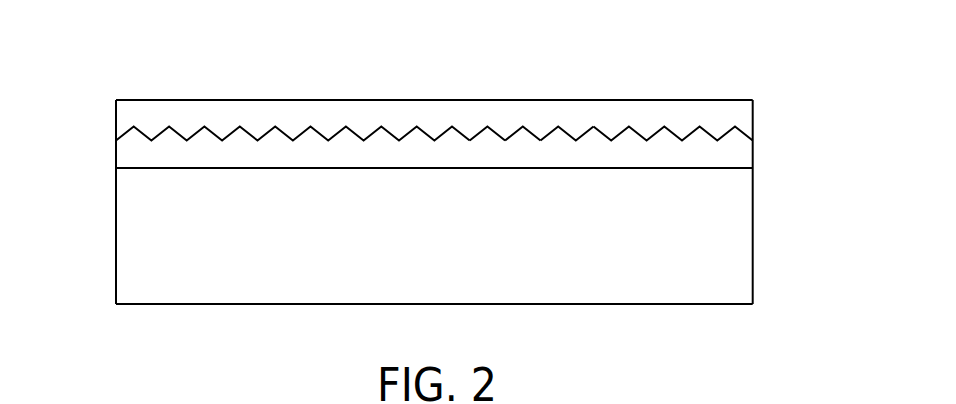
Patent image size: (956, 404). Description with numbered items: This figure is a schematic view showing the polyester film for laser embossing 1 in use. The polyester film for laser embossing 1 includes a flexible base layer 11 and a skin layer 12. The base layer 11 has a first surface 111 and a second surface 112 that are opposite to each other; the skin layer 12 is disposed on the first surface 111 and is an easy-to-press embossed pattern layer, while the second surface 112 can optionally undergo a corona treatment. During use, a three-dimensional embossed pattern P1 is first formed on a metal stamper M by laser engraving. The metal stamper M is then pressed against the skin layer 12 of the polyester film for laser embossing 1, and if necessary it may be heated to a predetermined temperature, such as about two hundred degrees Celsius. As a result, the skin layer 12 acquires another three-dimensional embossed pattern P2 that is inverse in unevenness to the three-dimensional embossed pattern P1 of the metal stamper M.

The polyester film for laser embossing 1 is at (456, 199).
The base layer 11 is at (438, 238).
The skin layer 12 is at (473, 116).
The first surface 111 is at (141, 168).
The second surface 112 is at (148, 304).
The metal stamper M is at (739, 99).
The three-dimensional embossed pattern P1 is at (486, 127).
The another three-dimensional embossed pattern P2 is at (550, 137).